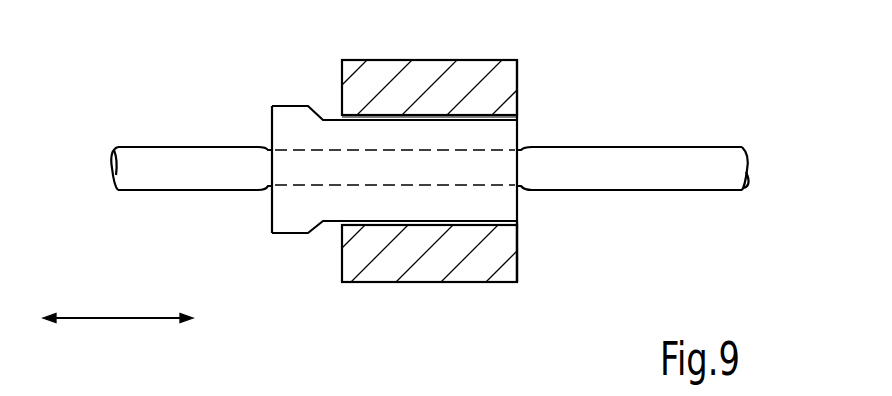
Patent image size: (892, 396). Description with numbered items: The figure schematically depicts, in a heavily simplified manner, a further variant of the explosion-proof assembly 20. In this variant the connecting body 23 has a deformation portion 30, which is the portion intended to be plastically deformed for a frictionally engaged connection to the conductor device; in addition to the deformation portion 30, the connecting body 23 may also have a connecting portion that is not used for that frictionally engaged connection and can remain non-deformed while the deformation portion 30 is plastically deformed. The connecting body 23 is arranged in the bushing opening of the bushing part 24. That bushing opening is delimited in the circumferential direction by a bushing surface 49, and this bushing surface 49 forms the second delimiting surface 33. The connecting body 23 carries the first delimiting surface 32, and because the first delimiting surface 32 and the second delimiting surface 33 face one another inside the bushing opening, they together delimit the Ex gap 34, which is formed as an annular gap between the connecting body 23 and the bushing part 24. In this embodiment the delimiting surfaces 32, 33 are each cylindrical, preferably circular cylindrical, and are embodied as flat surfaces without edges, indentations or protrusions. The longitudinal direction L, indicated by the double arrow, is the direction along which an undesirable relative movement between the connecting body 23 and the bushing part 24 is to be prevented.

The explosion-proof assembly 20 is at (692, 72).
The connecting body 23 is at (290, 120).
The bushing part 24 is at (495, 260).
The deformation portion 30 is at (423, 228).
The first delimiting surface 32 is at (335, 225).
The second delimiting surface 33 is at (496, 95).
The Ex gap 34 is at (517, 223).
The bushing surface 49 is at (480, 122).
The longitudinal direction L is at (103, 318).